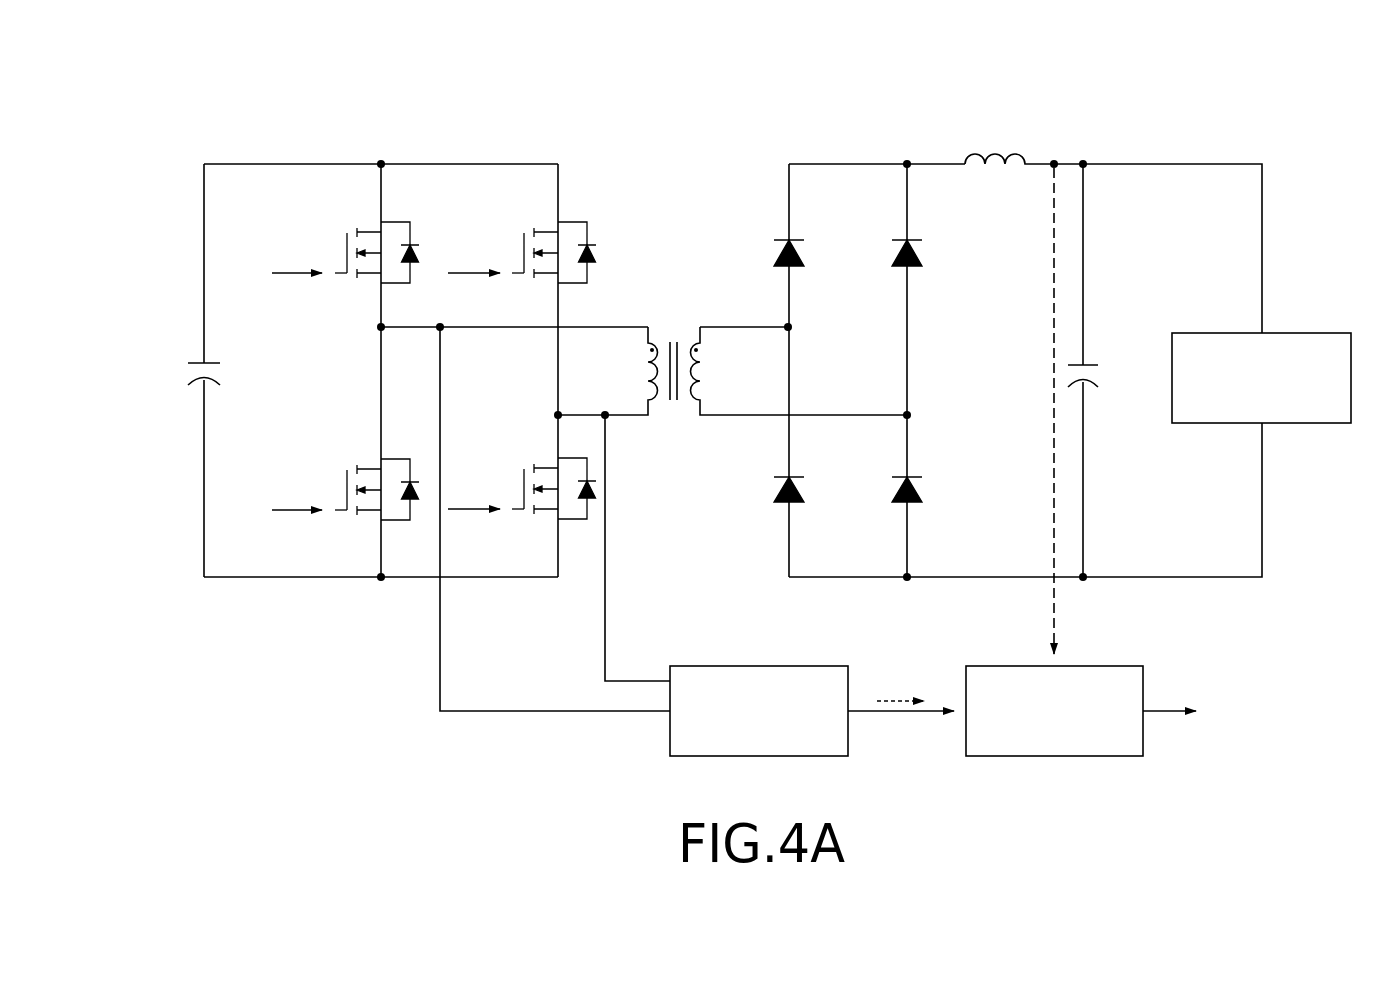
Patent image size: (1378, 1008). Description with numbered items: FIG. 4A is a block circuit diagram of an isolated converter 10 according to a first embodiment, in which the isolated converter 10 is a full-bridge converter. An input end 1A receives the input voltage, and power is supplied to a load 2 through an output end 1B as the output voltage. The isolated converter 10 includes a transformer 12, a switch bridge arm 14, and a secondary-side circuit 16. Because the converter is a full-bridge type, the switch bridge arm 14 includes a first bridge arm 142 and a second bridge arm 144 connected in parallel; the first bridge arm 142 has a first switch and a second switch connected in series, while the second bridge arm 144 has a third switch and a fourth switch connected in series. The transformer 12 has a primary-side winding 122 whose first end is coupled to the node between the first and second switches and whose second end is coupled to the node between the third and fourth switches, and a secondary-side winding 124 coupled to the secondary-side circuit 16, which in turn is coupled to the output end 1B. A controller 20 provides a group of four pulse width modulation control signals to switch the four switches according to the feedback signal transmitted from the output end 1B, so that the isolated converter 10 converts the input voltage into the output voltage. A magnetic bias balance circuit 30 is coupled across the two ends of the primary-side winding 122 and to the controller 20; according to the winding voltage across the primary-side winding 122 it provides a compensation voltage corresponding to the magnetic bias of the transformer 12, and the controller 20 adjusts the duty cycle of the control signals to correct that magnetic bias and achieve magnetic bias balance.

The isolated converter 10 is at (722, 102).
The input end 1A is at (232, 162).
The output end 1B is at (1068, 162).
The switch bridge arm 14 is at (433, 140).
The first bridge arm 142 is at (381, 590).
The second bridge arm 144 is at (558, 590).
The transformer 12 is at (675, 316).
The primary-side winding 122 is at (657, 403).
The secondary-side winding 124 is at (688, 403).
The secondary-side circuit 16 is at (878, 140).
The load 2 is at (1273, 340).
The controller 20 is at (1065, 673).
The magnetic bias balance circuit 30 is at (758, 670).